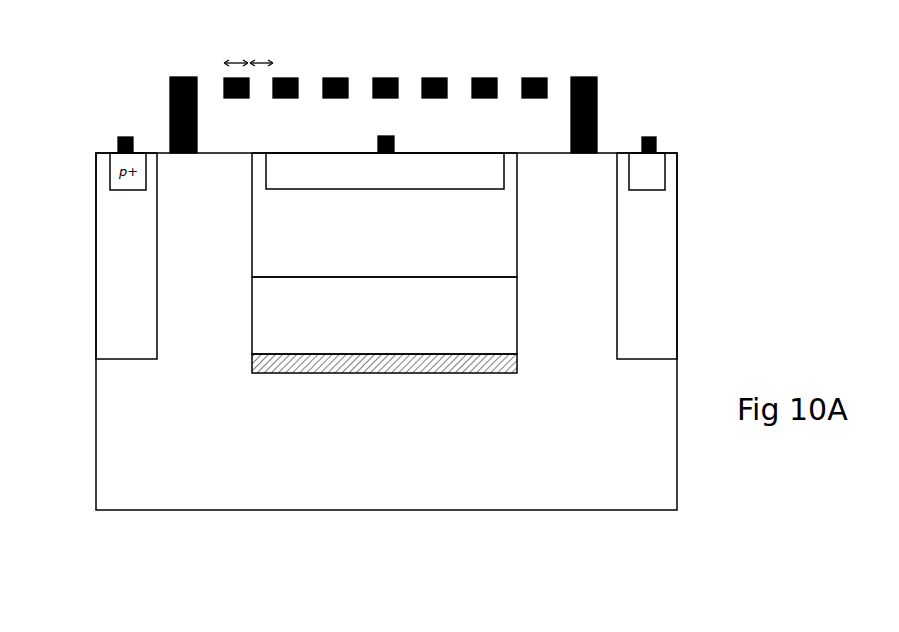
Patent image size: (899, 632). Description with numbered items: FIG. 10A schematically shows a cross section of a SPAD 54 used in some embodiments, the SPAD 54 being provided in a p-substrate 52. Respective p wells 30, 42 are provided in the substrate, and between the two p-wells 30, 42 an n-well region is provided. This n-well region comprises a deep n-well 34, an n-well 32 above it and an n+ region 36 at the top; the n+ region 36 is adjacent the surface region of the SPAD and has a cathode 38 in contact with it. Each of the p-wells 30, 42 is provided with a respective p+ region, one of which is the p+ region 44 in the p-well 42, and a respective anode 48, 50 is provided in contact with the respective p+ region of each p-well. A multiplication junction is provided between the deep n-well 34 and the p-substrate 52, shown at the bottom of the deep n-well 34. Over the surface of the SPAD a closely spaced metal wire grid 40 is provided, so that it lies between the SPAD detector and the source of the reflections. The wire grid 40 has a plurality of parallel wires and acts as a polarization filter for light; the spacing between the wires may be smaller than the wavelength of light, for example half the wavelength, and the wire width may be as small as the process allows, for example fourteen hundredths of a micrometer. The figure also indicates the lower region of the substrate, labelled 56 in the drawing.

The p well 30 is at (141, 279).
The n-well 32 is at (448, 245).
The deep n-well 34 is at (473, 328).
The n+ region 36 is at (365, 183).
The cathode 38 is at (390, 135).
The metal wire grid 40 is at (507, 90).
The p well 42 is at (647, 256).
The p+ region 44 is at (658, 177).
The anode 48 is at (118, 148).
The anode 50 is at (656, 148).
The p-substrate 52 is at (446, 423).
The SPAD 54 is at (680, 510).
The p-substrate 56 is at (140, 487).